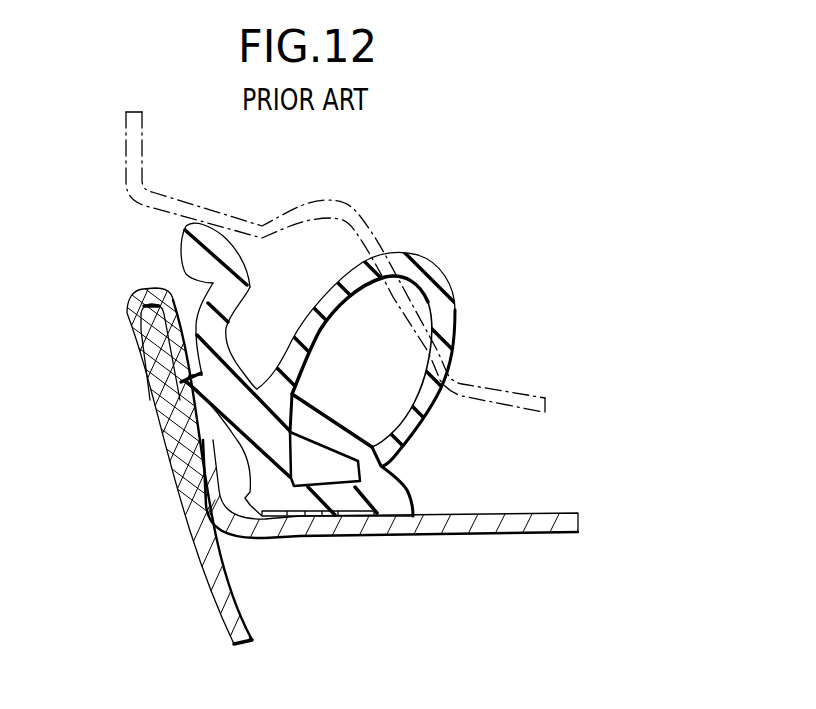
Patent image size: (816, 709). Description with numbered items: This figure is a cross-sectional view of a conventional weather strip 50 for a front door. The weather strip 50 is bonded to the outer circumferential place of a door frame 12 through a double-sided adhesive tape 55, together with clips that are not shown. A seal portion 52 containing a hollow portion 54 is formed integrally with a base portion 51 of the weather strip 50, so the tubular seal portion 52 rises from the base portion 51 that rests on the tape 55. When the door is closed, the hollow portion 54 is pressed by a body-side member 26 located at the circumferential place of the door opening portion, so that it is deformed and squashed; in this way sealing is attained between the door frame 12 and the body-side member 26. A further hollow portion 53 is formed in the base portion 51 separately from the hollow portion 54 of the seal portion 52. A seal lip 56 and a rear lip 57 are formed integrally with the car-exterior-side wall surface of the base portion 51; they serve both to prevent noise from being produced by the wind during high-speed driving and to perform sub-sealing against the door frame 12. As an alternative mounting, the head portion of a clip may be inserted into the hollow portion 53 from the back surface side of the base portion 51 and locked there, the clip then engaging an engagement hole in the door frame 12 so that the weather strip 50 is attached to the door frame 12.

The body-side member 26 is at (126, 147).
The weather strip 50 is at (185, 268).
The seal lip 56 is at (205, 282).
The seal portion 52 is at (309, 312).
The hollow portion 54 is at (361, 361).
The rear lip 57 is at (182, 383).
The door frame 12 is at (174, 459).
The hollow portion 53 is at (325, 459).
The base portion 51 is at (402, 486).
The double-sided adhesive tape 55 is at (337, 536).